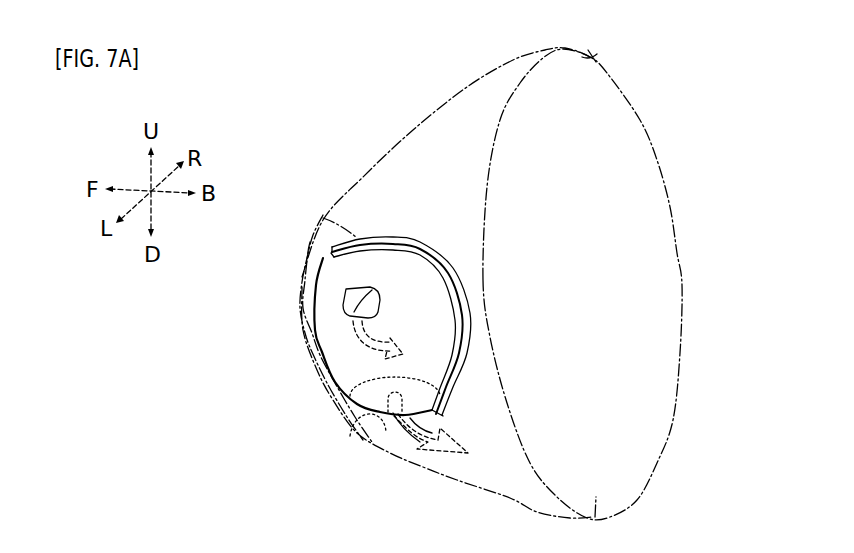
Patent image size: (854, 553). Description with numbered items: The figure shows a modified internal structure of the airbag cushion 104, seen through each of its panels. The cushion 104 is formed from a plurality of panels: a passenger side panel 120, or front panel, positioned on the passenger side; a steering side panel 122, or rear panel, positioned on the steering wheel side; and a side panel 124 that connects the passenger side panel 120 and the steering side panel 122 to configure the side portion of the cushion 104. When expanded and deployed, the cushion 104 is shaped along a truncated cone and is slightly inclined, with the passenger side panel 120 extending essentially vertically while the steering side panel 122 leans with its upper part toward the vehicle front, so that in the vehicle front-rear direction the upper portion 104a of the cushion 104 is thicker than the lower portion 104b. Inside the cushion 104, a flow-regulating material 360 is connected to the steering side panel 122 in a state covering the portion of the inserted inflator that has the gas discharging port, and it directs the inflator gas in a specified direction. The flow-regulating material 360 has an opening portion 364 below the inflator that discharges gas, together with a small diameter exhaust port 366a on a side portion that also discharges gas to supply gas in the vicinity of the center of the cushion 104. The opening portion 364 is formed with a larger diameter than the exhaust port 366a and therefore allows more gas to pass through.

The cushion 104 is at (441, 118).
The upper portion 104a is at (598, 52).
The lower portion 104b is at (600, 497).
The passenger side panel 120 is at (686, 252).
The steering side panel 122 is at (318, 266).
The side panel 124 is at (448, 473).
The flow-regulating material 360 is at (427, 247).
The opening portion 364 is at (370, 412).
The exhaust port 366a is at (343, 303).